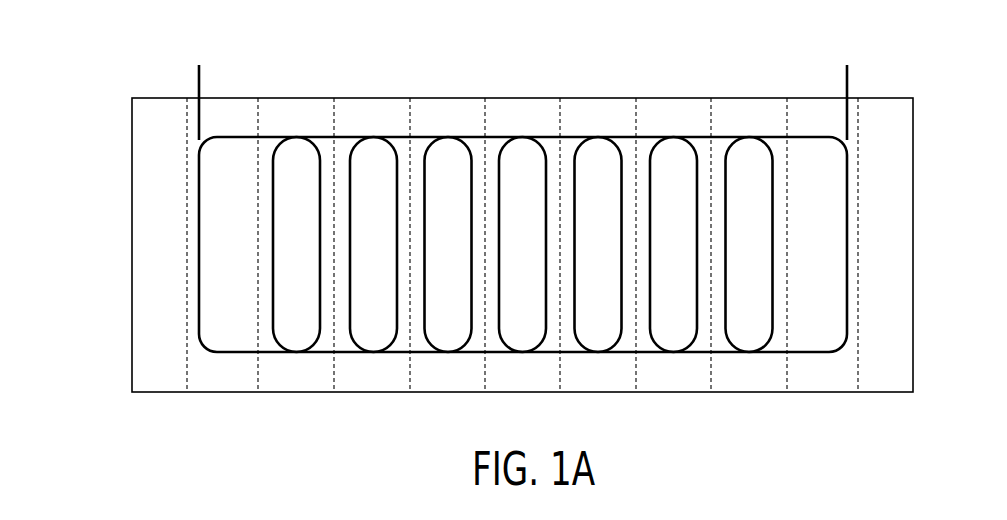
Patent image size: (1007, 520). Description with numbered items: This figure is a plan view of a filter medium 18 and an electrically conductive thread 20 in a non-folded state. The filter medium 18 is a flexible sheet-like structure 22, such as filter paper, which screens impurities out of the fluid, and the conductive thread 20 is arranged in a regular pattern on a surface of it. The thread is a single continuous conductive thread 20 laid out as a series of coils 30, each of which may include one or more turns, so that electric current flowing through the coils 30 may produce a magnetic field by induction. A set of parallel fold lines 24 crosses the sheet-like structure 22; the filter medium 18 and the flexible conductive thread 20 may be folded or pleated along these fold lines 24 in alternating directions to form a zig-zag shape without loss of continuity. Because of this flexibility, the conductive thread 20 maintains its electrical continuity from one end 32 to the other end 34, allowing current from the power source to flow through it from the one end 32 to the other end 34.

The filter medium 18 is at (160, 108).
The electrically conductive thread 20 is at (698, 136).
The sheet-like structure 22 is at (472, 234).
The fold lines 24 is at (187, 367).
The coils 30 is at (576, 247).
The one end 32 is at (208, 82).
The other end 34 is at (855, 82).